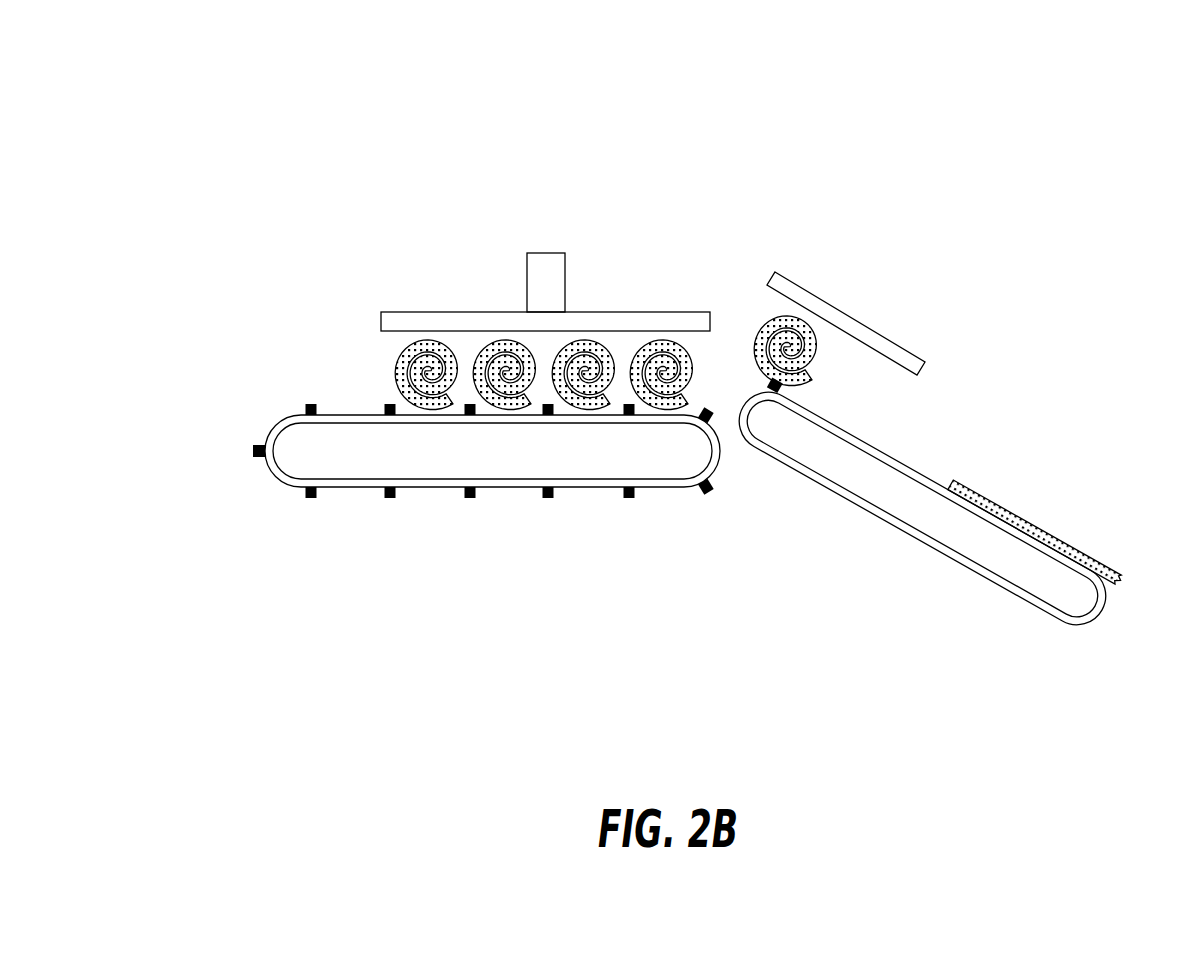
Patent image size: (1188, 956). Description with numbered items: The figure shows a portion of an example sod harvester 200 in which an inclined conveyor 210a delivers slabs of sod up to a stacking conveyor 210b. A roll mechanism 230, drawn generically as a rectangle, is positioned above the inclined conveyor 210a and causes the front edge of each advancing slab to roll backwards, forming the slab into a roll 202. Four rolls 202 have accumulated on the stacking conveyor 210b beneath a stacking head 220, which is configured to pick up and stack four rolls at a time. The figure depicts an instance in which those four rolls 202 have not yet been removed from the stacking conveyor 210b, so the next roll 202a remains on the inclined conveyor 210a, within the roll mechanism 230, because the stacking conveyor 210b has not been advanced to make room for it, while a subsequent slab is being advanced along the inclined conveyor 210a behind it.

The sod harvester 200 is at (723, 43).
The roll 202 is at (332, 359).
The next roll 202a is at (748, 302).
The inclined conveyor 210a is at (905, 504).
The stacking conveyor 210b is at (443, 485).
The stacking head 220 is at (447, 312).
The roll mechanism 230 is at (907, 342).